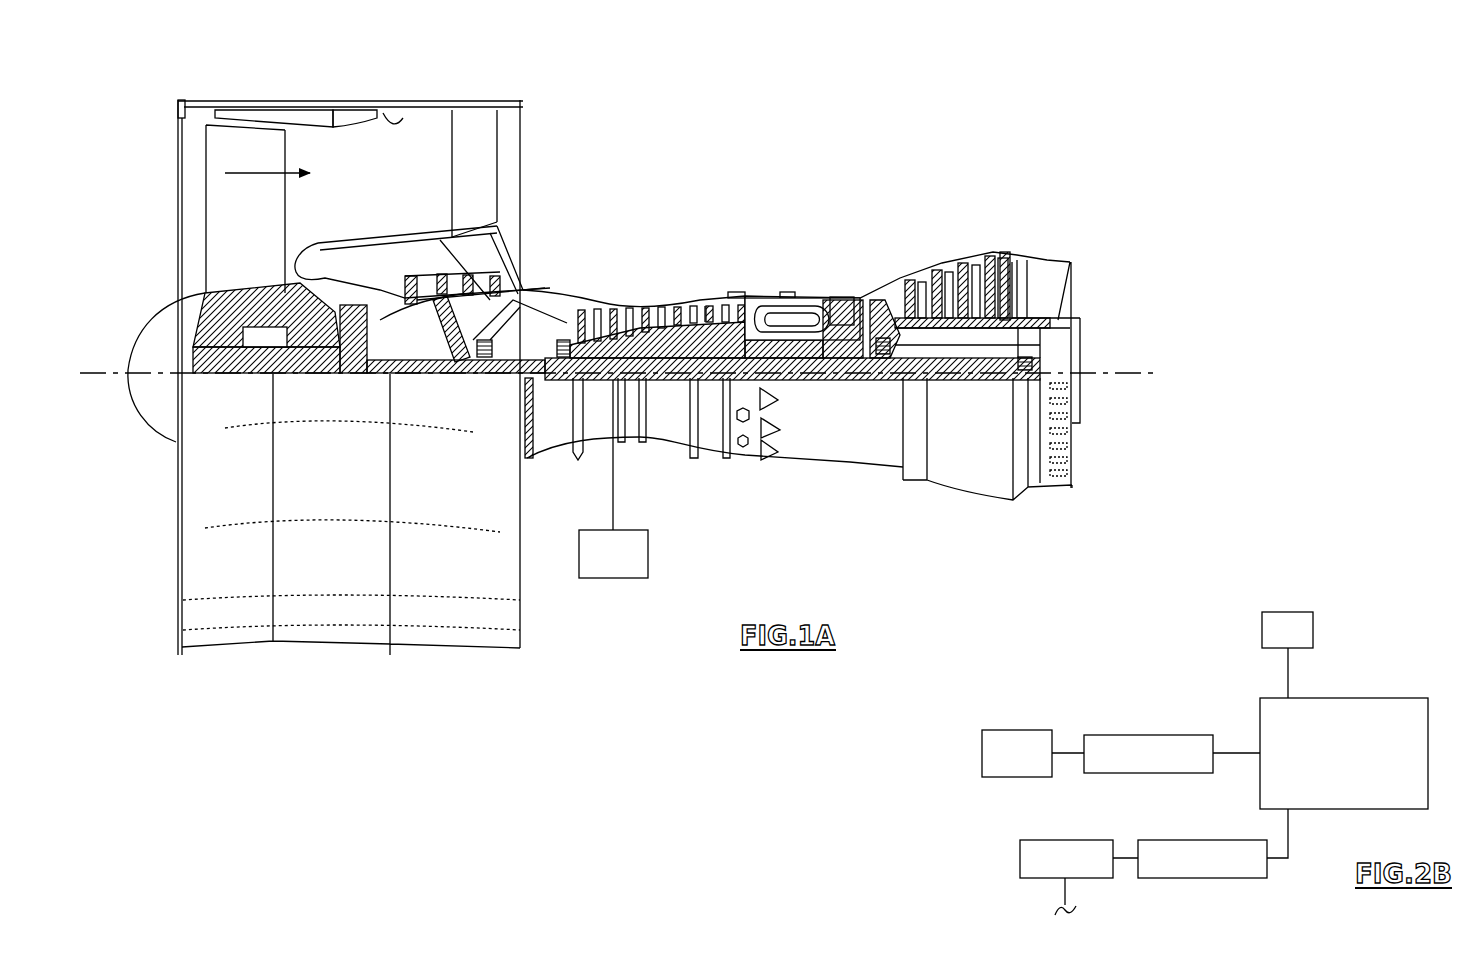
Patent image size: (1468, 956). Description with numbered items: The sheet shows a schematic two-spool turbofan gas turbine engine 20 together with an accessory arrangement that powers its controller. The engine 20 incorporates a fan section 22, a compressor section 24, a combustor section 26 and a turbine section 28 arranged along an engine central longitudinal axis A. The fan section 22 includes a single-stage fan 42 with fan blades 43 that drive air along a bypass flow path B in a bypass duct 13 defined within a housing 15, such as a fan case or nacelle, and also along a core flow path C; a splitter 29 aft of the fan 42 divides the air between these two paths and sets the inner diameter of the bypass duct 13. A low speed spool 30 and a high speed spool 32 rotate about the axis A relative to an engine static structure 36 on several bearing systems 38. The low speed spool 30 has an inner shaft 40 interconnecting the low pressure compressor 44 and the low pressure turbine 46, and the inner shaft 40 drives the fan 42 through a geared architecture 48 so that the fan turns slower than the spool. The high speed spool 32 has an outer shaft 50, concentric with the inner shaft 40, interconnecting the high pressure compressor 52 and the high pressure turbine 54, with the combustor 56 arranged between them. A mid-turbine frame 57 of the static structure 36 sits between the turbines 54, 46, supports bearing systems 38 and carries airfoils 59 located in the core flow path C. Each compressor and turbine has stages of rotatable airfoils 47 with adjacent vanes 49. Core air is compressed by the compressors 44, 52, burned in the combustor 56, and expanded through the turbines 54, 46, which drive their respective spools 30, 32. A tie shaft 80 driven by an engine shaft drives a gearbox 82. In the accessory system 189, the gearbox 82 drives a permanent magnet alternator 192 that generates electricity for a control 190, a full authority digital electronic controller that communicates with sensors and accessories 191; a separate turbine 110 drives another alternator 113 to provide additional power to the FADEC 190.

In FIG. 1A, the gas turbine engine 20 is at (792, 144).
In FIG. 1A, the fan section 22 is at (283, 94).
In FIG. 1A, the compressor section 24 is at (573, 277).
In FIG. 1A, the combustor section 26 is at (780, 270).
In FIG. 1A, the turbine section 28 is at (923, 233).
In FIG. 1A, the housing 15 is at (353, 105).
In FIG. 1A, the bypass duct 13 is at (390, 126).
In FIG. 1A, the splitter 29 is at (317, 243).
In FIG. 1A, the low speed spool 30 is at (672, 384).
In FIG. 1A, the high speed spool 32 is at (718, 306).
In FIG. 1A, the engine static structure 36 is at (710, 455).
In FIG. 1A, the bearing systems 38 is at (488, 367).
In FIG. 1A, the inner shaft 40 is at (541, 388).
In FIG. 1A, the fan 42 is at (258, 223).
In FIG. 1A, the fan blades 43 is at (268, 231).
In FIG. 1A, the low pressure compressor 44 is at (503, 240).
In FIG. 1A, the low pressure turbine 46 is at (972, 263).
In FIG. 1A, the rotatable airfoils 47 is at (398, 272).
In FIG. 1A, the geared architecture 48 is at (357, 357).
In FIG. 1A, the vanes 49 is at (432, 277).
In FIG. 1A, the outer shaft 50 is at (788, 366).
In FIG. 1A, the high pressure compressor 52 is at (648, 305).
In FIG. 1A, the high pressure turbine 54 is at (840, 292).
In FIG. 1A, the combustor 56 is at (780, 316).
In FIG. 1A, the mid-turbine frame 57 is at (887, 280).
In FIG. 1A, the airfoils 59 is at (908, 343).
In FIG. 1A, the tie shaft 80 is at (613, 502).
In FIG. 1A, the gearbox 82 is at (638, 546).
In FIG. 2B, the gearbox 82 is at (1018, 730).
In FIG. 1A, the engine central longitudinal axis A is at (1157, 373).
In FIG. 1A, the bypass flow path B is at (256, 172).
In FIG. 1A, the core flow path C is at (348, 272).
In FIG. 2B, the system 189 is at (1160, 654).
In FIG. 2B, the control 190 is at (1358, 710).
In FIG. 2B, the sensors and accessories 191 is at (1308, 623).
In FIG. 2B, the permanent magnet alternator 192 is at (1186, 734).
In FIG. 2B, the turbine 110 is at (1019, 853).
In FIG. 2B, the alternator 113 is at (1255, 878).